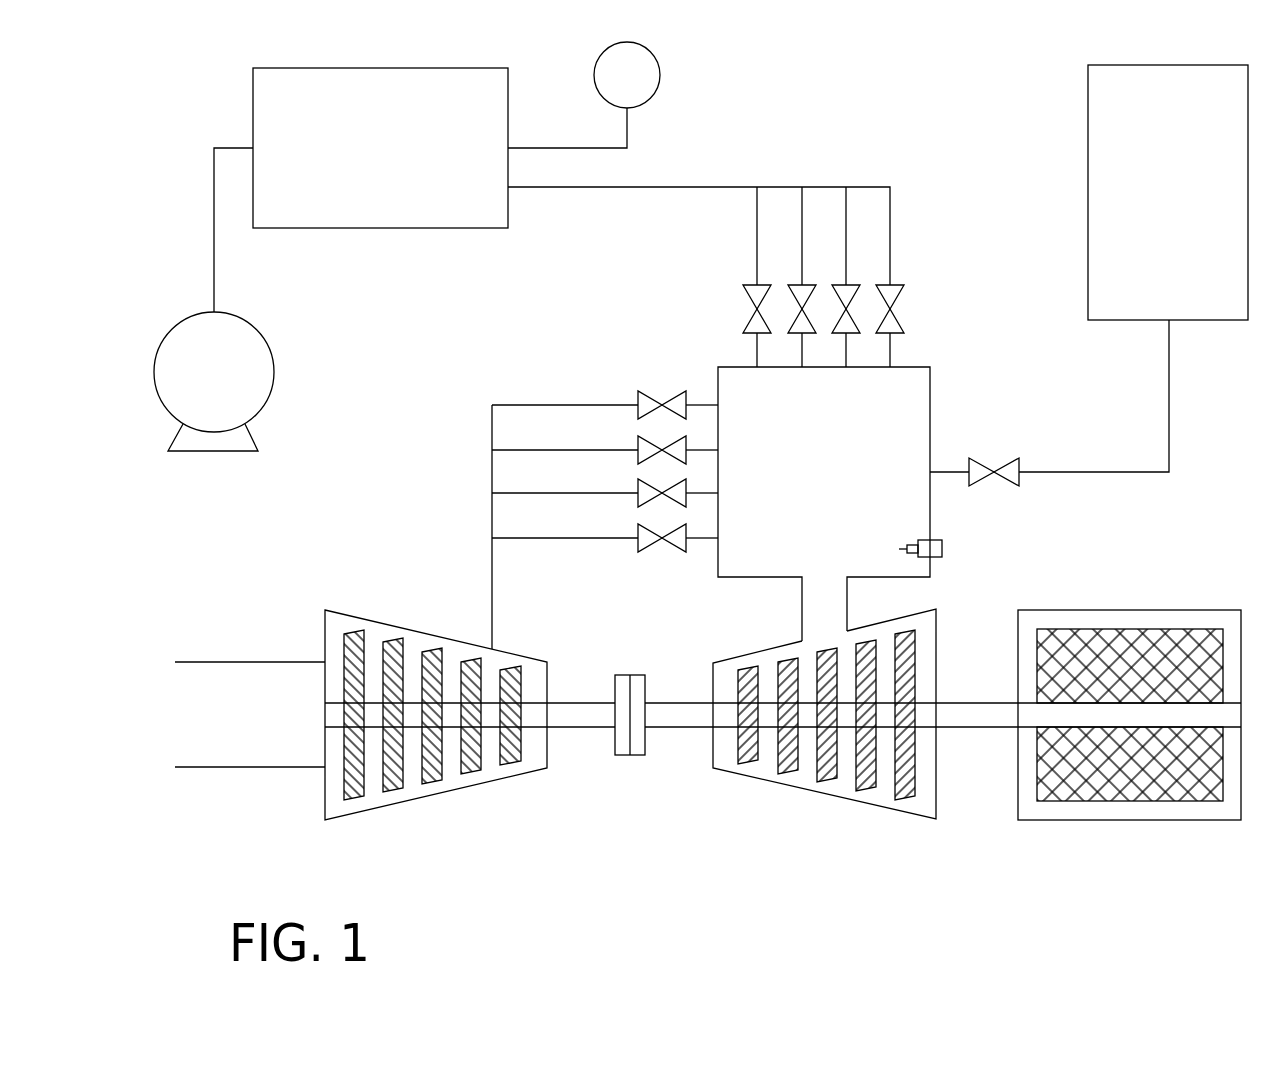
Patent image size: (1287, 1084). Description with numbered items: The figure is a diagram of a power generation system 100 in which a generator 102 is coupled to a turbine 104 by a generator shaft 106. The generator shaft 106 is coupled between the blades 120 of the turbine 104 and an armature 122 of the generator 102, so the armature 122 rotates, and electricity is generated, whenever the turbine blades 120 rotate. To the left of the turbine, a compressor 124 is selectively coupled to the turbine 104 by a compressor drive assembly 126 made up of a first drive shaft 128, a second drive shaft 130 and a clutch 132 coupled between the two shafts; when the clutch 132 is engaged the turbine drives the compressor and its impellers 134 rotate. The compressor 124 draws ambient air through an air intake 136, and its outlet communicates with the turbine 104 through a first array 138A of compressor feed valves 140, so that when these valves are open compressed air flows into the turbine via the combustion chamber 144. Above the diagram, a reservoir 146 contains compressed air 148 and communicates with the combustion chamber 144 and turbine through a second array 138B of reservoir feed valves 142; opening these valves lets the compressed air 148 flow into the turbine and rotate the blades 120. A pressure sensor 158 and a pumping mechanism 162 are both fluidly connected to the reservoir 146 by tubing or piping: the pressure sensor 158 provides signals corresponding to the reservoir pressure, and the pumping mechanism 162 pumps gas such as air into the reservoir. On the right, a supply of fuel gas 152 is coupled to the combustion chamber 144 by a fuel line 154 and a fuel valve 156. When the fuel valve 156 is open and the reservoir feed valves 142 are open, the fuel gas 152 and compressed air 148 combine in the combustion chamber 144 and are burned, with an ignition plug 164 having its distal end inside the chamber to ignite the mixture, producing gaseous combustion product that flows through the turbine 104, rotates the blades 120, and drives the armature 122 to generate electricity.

The system 100 is at (245, 830).
The generator 102 is at (1129, 706).
The turbine 104 is at (824, 755).
The generator shaft 106 is at (977, 730).
The blades 120 is at (866, 791).
The armature 122 is at (1205, 629).
The compressor 124 is at (436, 714).
The compressor drive assembly 126 is at (630, 750).
The first drive shaft 128 is at (582, 730).
The second drive shaft 130 is at (681, 730).
The clutch 132 is at (632, 757).
The impellers 134 is at (393, 638).
The air intake 136 is at (208, 662).
The first array 138A is at (616, 425).
The second array 138B is at (768, 286).
The compressor feed valves 140 is at (660, 400).
The reservoir feed valves 142 is at (757, 310).
The combustion chamber 144 is at (930, 505).
The reservoir 146 is at (380, 185).
The compressed air 148 is at (428, 190).
The fuel gas 152 is at (1192, 272).
The fuel line 154 is at (1169, 392).
The fuel valve 156 is at (994, 460).
The pressure sensor 158 is at (658, 92).
The pumping mechanism 162 is at (240, 390).
The ignition plug 164 is at (942, 548).